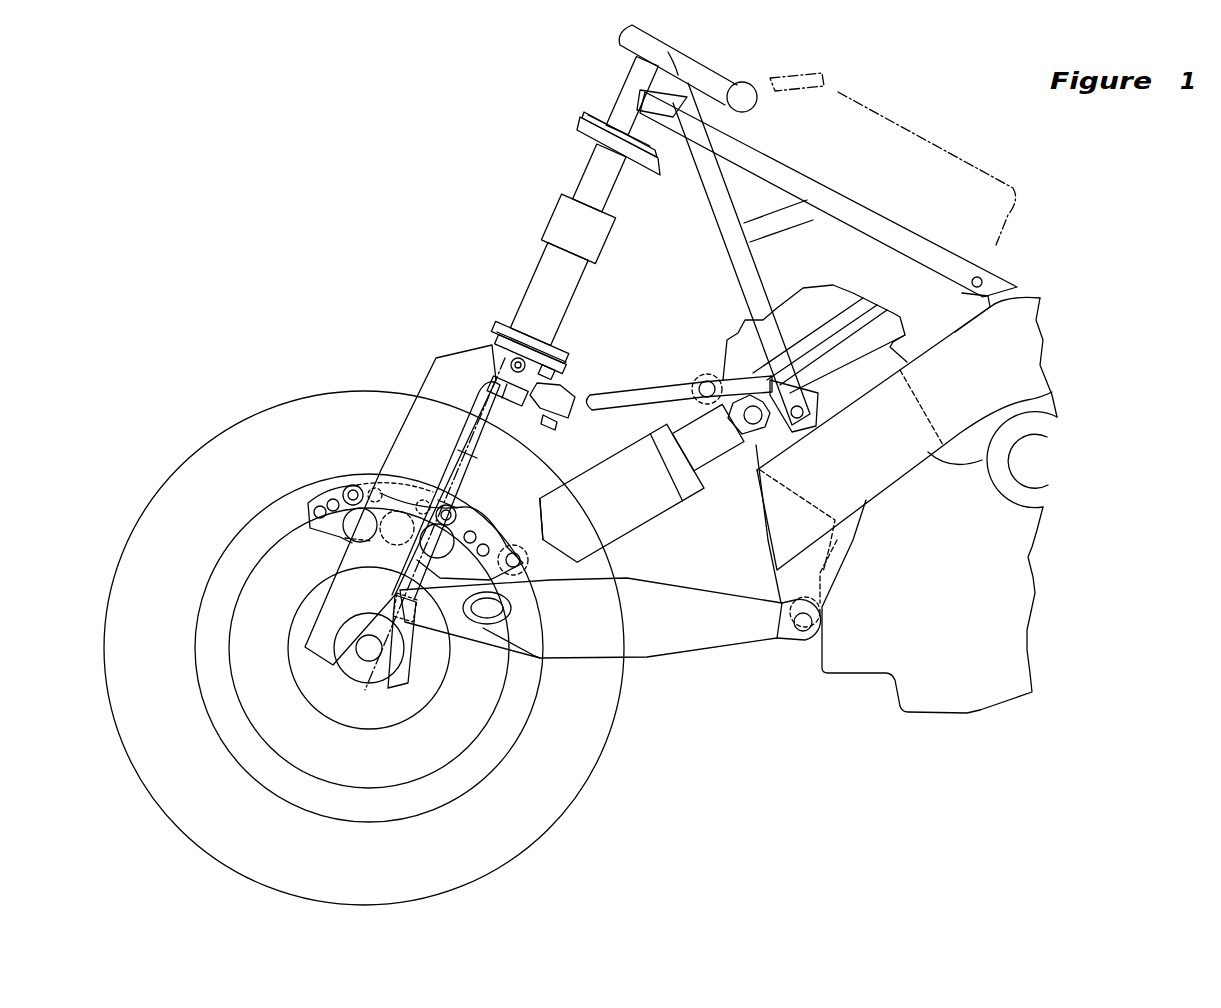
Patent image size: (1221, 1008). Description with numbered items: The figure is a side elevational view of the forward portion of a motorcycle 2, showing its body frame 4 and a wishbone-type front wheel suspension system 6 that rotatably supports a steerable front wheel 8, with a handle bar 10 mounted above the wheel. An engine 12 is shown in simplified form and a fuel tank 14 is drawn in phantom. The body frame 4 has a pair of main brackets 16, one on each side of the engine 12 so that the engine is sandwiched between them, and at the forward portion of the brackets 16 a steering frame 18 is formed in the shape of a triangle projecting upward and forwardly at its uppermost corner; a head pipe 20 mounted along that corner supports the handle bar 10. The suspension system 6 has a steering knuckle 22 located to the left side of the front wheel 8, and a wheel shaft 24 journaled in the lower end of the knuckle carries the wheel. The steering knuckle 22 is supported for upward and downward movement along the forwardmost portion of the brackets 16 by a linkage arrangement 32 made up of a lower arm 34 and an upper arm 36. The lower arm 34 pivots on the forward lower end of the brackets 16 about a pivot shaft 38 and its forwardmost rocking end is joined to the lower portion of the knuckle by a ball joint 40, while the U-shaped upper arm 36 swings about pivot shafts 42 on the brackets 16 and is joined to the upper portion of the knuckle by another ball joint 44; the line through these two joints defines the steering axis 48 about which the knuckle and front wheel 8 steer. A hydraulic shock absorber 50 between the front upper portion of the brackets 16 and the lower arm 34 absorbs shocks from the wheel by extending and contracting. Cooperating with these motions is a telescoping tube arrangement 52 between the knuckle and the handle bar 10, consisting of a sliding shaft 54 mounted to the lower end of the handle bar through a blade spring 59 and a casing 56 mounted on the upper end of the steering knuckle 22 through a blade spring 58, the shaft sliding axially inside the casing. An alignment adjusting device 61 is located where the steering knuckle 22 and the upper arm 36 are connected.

The motorcycle 2 is at (352, 192).
The body frame 4 is at (1030, 292).
The front wheel suspension system 6 is at (318, 434).
The front wheel 8 is at (556, 810).
The handle bar 10 is at (693, 63).
The engine 12 is at (883, 663).
The fuel tank 14 is at (873, 110).
The main brackets 16 is at (903, 465).
The steering frame 18 is at (880, 220).
The head pipe 20 is at (627, 92).
The steering knuckle 22 is at (356, 553).
The wheel shaft 24 is at (370, 650).
The linkage arrangement 32 is at (654, 662).
The lower arm 34 is at (595, 643).
The upper arm 36 is at (625, 383).
The pivot shaft 38 is at (800, 632).
The ball joint 40 is at (455, 630).
The pivot shafts 42 is at (708, 378).
The ball joint 44 is at (498, 392).
The steering axis 48 is at (466, 465).
The hydraulic shock absorber 50 is at (655, 512).
The telescoping tube arrangement 52 is at (538, 230).
The sliding shaft 54 is at (593, 192).
The casing 56 is at (545, 297).
The blade spring 58 is at (505, 315).
The blade spring 59 is at (573, 133).
The alignment adjusting device 61 is at (516, 412).